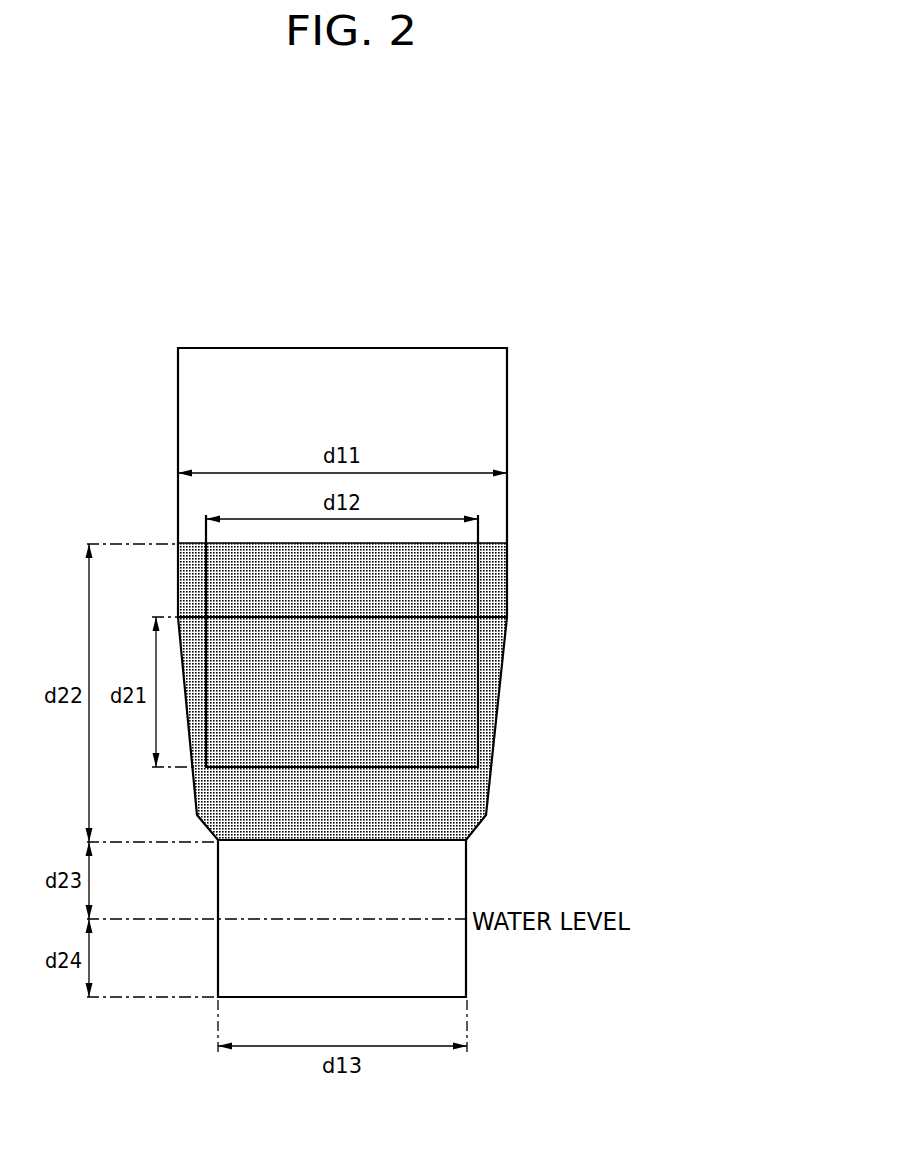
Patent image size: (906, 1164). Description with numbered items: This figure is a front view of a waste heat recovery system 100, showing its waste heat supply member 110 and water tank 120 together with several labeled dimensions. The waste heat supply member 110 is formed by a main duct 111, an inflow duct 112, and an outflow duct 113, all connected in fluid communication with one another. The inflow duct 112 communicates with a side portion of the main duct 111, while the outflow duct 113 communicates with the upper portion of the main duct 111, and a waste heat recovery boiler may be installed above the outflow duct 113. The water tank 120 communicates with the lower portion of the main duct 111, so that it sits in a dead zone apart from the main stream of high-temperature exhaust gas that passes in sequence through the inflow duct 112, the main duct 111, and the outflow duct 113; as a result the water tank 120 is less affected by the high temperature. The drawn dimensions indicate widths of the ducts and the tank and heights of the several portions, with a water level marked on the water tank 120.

The waste heat recovery system 100 is at (483, 672).
The waste heat supply member 110 is at (450, 677).
The main duct 111 is at (490, 673).
The inflow duct 112 is at (462, 715).
The outflow duct 113 is at (507, 415).
The water tank 120 is at (470, 902).